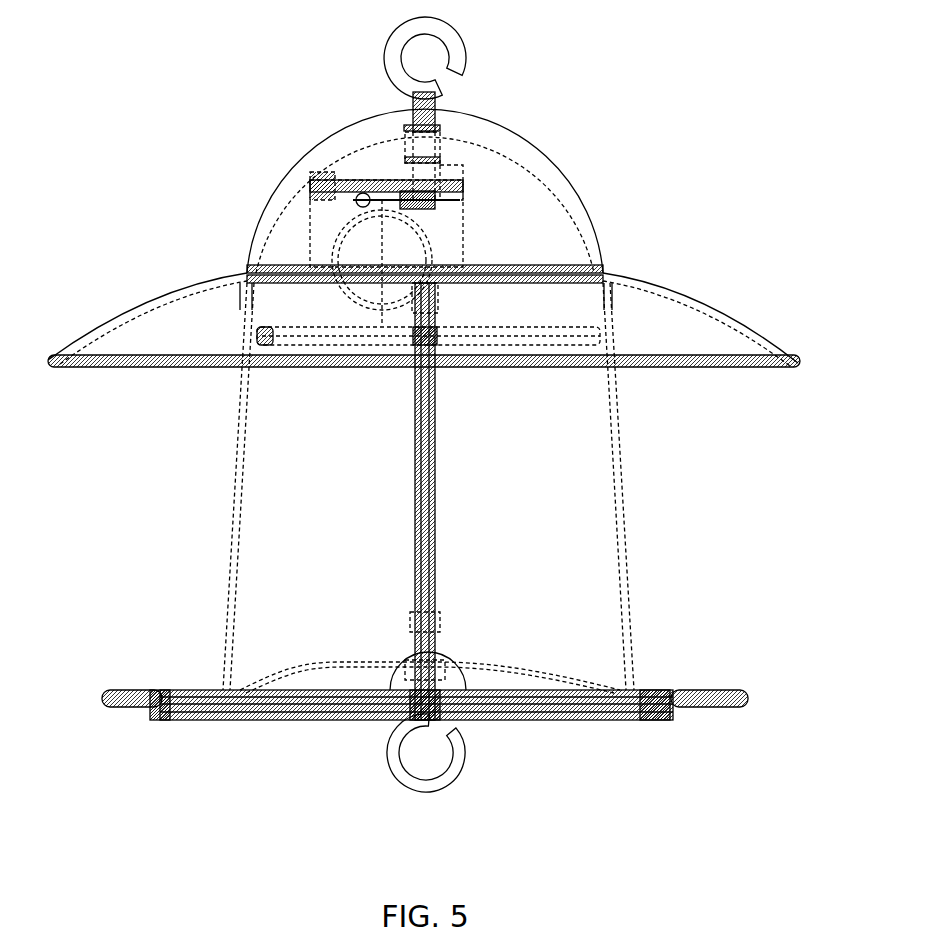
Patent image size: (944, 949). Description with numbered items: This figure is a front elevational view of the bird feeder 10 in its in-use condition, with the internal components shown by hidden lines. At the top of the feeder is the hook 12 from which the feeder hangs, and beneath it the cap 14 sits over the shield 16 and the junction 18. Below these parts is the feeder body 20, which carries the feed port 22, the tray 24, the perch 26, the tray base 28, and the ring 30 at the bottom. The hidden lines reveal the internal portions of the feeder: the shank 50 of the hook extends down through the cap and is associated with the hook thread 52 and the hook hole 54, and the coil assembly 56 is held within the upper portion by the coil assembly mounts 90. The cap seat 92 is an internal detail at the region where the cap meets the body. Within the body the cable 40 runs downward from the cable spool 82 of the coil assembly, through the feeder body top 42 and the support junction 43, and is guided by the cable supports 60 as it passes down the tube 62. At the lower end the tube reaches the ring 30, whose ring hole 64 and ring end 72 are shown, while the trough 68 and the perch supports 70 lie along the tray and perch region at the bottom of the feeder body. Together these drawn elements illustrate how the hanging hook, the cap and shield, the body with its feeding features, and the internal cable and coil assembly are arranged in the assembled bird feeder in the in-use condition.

The bird feeder 10 is at (553, 186).
The hook 12 is at (455, 46).
The cap 14 is at (580, 218).
The shield 16 is at (673, 293).
The junction 18 is at (602, 270).
The feeder body 20 is at (623, 538).
The feed port 22 is at (457, 680).
The tray 24 is at (102, 693).
The perch 26 is at (738, 692).
The tray base 28 is at (330, 720).
The ring 30 is at (398, 776).
The cable 40 is at (422, 308).
The feeder body top 42 is at (563, 325).
The support junction 43 is at (430, 340).
The shank 50 is at (435, 118).
The hook thread 52 is at (408, 145).
The hook hole 54 is at (415, 128).
The coil assembly 56 is at (308, 243).
The cable support 60 is at (290, 333).
The tube 62 is at (413, 542).
The ring hole 64 is at (415, 708).
The trough 68 is at (655, 705).
The perch support 70 is at (160, 712).
The ring end 72 is at (437, 616).
The cable spool 82 is at (365, 250).
The coil assembly mount 90 is at (318, 172).
The cap seat 92 is at (238, 307).